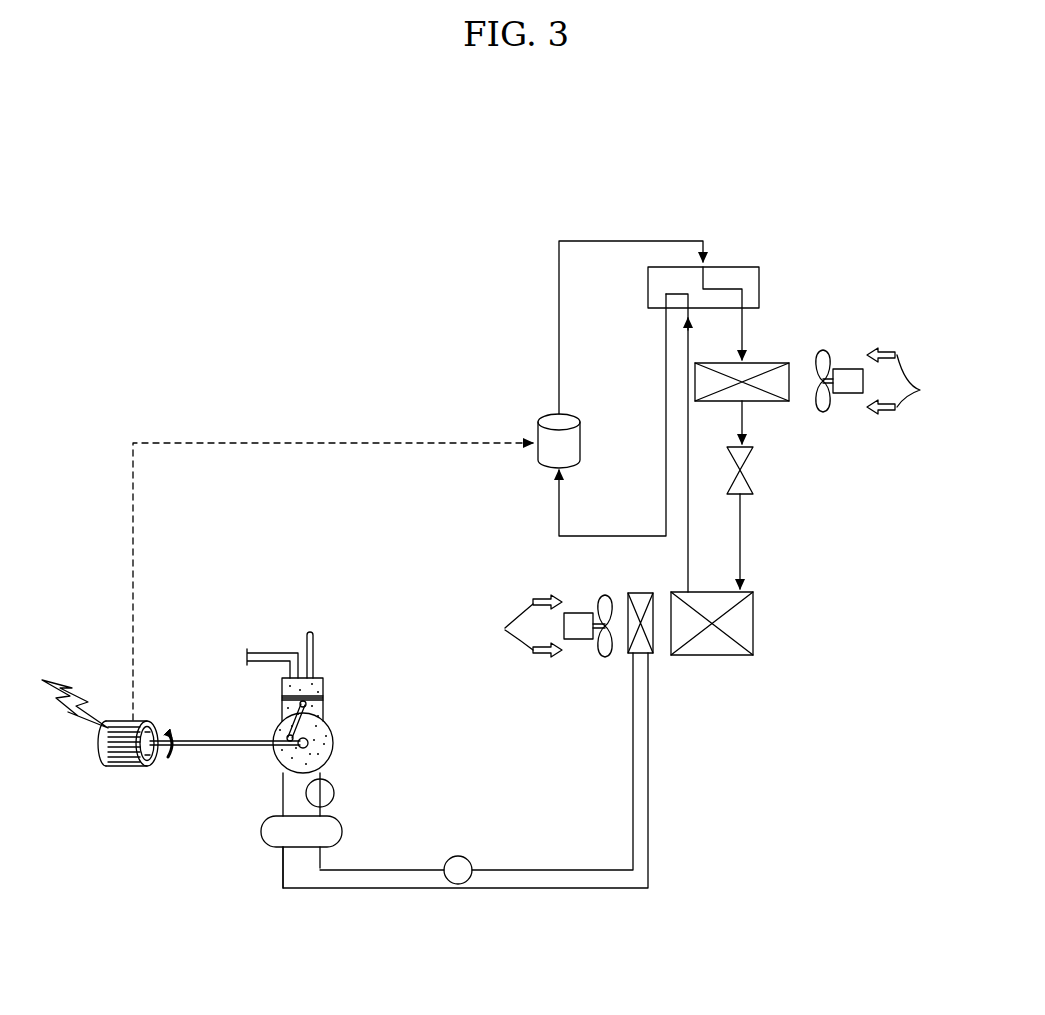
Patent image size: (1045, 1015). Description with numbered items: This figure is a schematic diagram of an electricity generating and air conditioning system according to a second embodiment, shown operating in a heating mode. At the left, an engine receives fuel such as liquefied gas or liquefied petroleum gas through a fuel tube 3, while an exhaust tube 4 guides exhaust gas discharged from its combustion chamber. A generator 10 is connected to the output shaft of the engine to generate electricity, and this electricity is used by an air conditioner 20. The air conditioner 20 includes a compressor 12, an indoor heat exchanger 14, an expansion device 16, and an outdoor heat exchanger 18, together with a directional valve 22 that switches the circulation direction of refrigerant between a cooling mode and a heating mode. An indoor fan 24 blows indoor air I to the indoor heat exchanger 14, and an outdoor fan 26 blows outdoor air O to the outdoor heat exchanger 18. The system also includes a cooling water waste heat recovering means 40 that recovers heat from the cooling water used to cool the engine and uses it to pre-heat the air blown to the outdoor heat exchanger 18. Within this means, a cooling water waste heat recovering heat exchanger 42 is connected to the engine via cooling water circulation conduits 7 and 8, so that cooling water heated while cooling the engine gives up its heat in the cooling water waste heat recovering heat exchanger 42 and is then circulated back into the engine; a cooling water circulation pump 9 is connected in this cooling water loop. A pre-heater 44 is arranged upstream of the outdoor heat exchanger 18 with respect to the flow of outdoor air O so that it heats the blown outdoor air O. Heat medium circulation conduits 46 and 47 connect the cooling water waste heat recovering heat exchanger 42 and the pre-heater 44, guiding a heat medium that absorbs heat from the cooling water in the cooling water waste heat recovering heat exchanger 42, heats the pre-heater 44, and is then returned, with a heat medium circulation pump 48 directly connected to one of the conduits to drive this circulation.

The fuel tube 3 is at (266, 654).
The exhaust tube 4 is at (307, 645).
The cooling water circulation conduit 7 is at (283, 796).
The cooling water circulation conduit 8 is at (333, 768).
The cooling water circulation pump 9 is at (334, 793).
The generator 10 is at (125, 777).
The compressor 12 is at (580, 452).
The indoor heat exchanger 14 is at (770, 363).
The expansion device 16 is at (748, 485).
The outdoor heat exchanger 18 is at (756, 598).
The air conditioner 20 is at (803, 198).
The directional valve 22 is at (757, 266).
The indoor fan 24 is at (826, 405).
The outdoor fan 26 is at (606, 650).
The cooling water waste heat recovering means 40 is at (669, 900).
The cooling water waste heat recovering heat exchanger 42 is at (262, 843).
The pre-heater 44 is at (640, 593).
The heat medium circulation conduit 46 is at (565, 870).
The heat medium circulation conduit 47 is at (580, 890).
The heat medium circulation pump 48 is at (462, 856).
The indoor air I is at (900, 381).
The outdoor air O is at (523, 626).